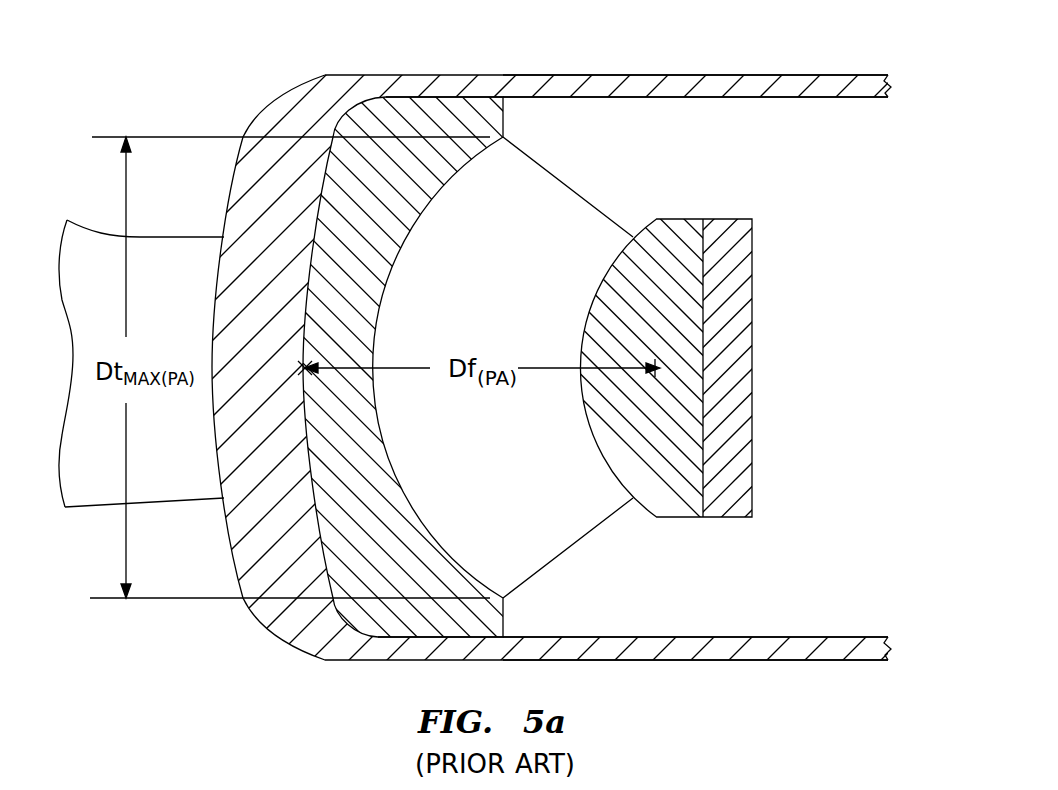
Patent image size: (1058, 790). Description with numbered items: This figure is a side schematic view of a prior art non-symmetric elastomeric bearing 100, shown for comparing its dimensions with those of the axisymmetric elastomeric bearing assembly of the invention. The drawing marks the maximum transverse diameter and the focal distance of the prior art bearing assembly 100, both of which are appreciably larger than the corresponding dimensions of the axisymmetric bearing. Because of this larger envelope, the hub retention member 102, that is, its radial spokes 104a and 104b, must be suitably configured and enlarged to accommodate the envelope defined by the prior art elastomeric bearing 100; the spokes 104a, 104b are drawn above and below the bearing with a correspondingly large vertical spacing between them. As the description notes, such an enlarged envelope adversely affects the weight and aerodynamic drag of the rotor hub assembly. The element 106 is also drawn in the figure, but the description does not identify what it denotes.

The prior art non-symmetric elastomeric bearing 100 is at (650, 185).
The hub retention member 102 is at (778, 53).
The radial spoke 104a is at (852, 97).
The radial spoke 104b is at (847, 642).
The lens 106 is at (748, 480).